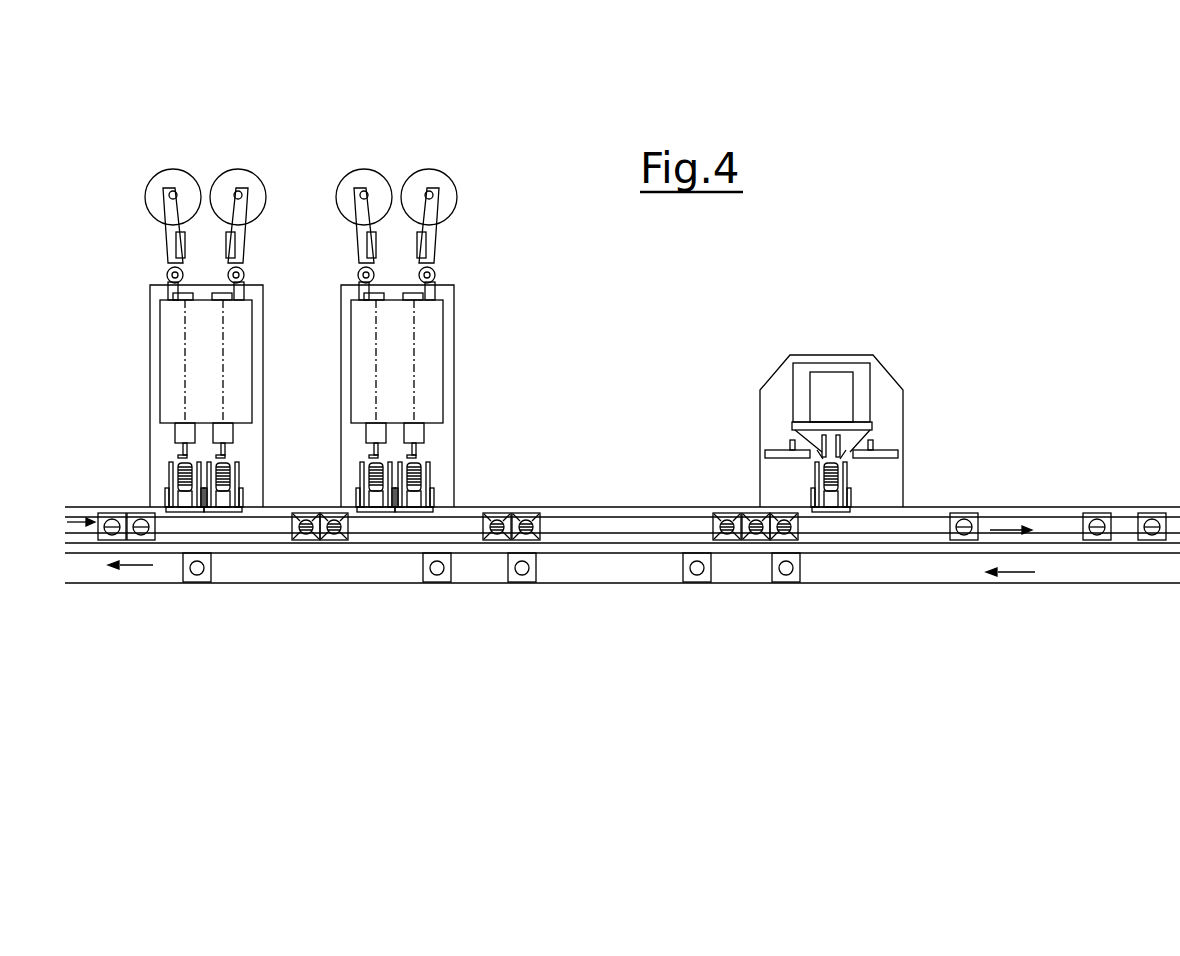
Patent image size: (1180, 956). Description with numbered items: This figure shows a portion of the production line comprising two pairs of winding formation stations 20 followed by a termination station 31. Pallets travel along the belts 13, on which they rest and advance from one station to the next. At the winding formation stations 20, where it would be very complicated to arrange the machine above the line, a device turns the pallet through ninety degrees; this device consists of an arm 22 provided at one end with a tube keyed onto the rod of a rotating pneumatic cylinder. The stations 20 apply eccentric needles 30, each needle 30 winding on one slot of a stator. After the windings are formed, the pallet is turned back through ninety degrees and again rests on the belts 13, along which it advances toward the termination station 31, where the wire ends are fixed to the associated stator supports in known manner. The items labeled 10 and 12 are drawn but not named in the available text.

The container 10 is at (177, 474).
The carrier 12 is at (436, 507).
The belts 13 is at (633, 508).
The winding formation station 20 is at (203, 130).
The arm 22 is at (173, 499).
The eccentric needle 30 is at (178, 447).
The termination station 31 is at (904, 369).